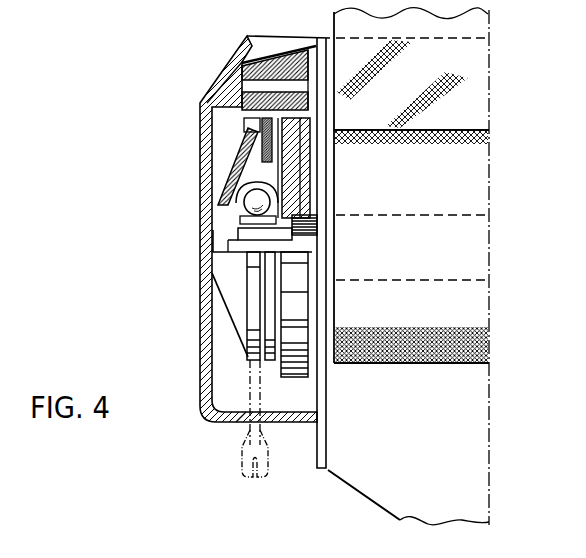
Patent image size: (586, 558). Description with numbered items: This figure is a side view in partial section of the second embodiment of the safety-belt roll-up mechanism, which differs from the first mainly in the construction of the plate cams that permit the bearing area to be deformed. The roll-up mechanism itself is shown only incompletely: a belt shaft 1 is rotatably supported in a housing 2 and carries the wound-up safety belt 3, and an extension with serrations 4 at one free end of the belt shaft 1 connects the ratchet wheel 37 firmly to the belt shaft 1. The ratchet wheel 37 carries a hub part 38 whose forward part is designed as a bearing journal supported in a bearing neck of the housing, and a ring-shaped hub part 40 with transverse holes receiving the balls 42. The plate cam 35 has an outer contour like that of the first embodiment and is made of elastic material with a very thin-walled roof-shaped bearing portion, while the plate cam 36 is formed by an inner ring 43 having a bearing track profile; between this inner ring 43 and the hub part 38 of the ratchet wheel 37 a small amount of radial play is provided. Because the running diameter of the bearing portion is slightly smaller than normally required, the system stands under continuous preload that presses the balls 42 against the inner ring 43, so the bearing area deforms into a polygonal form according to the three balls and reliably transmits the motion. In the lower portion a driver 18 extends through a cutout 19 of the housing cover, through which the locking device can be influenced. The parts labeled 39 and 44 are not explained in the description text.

The belt shaft 1 is at (452, 262).
The housing 2 is at (482, 472).
The safety belt 3 is at (486, 27).
The serrations 4 is at (290, 235).
The driver 18 is at (238, 460).
The cutout 19 is at (243, 415).
The plate cam 35 is at (262, 135).
The plate cam 36 is at (235, 170).
The ratchet wheel 37 is at (300, 158).
The hub part 38 is at (215, 254).
The casing 39 is at (210, 312).
The ring-shaped hub part 40 is at (245, 206).
The balls 42 is at (270, 213).
The inner ring 43 is at (278, 214).
The bracket 44 is at (213, 232).